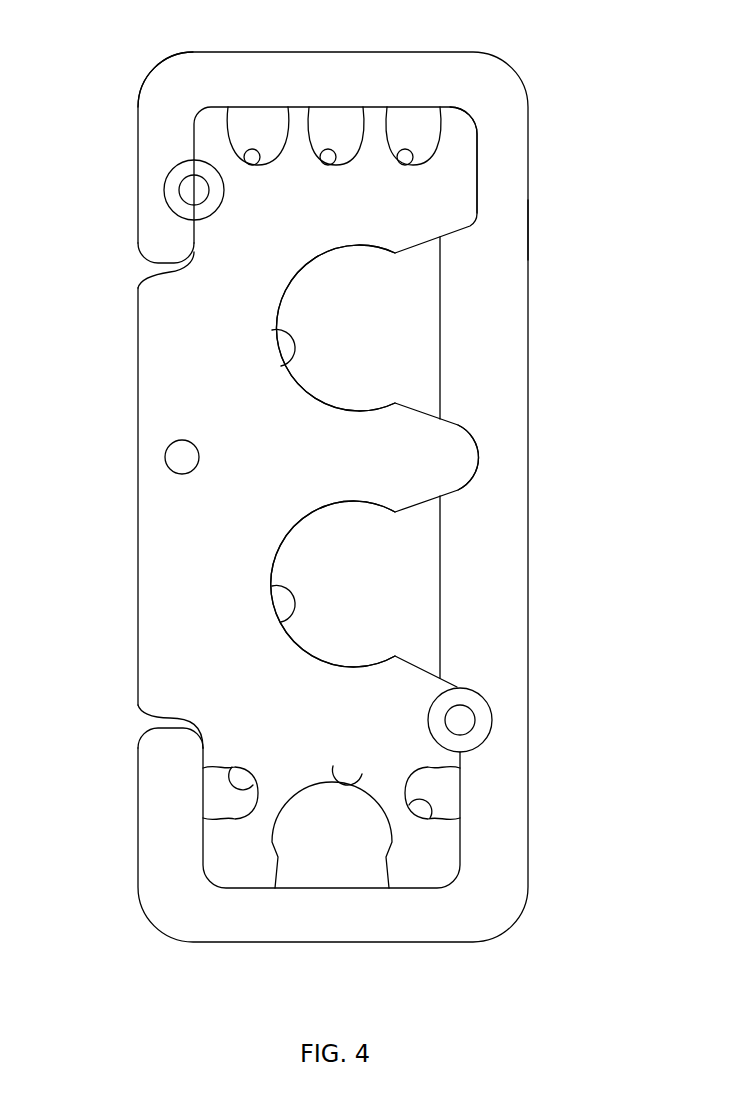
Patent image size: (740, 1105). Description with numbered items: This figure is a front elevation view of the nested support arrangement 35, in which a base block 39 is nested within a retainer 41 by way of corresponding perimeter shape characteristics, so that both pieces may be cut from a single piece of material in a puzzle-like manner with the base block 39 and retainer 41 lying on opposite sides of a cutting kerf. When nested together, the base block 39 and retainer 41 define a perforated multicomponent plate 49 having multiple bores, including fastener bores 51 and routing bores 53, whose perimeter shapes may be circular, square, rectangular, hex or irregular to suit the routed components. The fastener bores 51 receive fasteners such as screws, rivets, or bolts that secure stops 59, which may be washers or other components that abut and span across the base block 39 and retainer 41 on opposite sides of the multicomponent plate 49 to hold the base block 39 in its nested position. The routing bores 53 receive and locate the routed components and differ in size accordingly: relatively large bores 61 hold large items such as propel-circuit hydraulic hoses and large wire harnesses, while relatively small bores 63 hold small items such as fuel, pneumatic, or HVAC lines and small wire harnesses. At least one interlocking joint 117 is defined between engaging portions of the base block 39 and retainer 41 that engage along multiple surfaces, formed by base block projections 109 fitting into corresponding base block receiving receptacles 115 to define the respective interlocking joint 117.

The nested support arrangement 35 is at (575, 48).
The base block 39 is at (120, 520).
The retainer 41 is at (578, 232).
The perforated multicomponent plate 49 is at (145, 62).
The fastener bores 51 is at (192, 192).
The routing bores 53 is at (258, 135).
The stops 59 is at (185, 180).
The relatively large bores 61 is at (287, 355).
The relatively small bores 63 is at (252, 164).
The base block projections 109 is at (450, 450).
The base block receiving receptacles 115 is at (458, 426).
The interlocking joint 117 is at (488, 155).